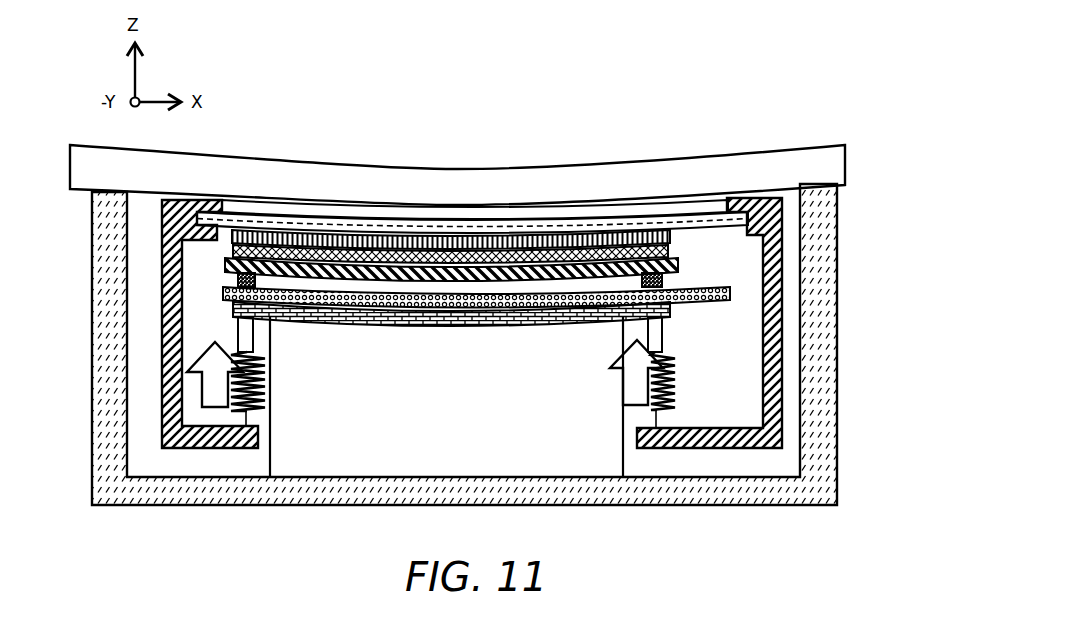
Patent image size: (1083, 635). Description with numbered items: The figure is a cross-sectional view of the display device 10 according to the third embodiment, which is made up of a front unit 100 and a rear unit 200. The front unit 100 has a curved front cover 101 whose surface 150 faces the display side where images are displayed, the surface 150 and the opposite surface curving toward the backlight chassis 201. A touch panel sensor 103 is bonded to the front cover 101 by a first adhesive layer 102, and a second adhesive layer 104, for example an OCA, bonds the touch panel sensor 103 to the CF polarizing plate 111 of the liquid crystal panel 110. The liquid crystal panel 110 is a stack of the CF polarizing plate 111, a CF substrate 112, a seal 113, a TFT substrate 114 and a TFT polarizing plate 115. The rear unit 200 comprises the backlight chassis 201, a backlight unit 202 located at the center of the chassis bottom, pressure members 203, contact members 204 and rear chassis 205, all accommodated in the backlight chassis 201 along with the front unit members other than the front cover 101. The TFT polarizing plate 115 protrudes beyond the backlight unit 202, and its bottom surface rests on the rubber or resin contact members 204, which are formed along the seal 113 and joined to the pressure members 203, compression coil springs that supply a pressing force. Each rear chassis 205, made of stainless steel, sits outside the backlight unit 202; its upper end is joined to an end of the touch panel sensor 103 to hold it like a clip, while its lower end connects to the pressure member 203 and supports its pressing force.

The display device 10 is at (530, 142).
The front unit 100 is at (592, 211).
The front cover 101 is at (675, 203).
The first adhesive layer 102 is at (705, 218).
The touch panel sensor 103 is at (672, 236).
The second adhesive layer 104 is at (670, 251).
The liquid crystal panel 110 is at (585, 281).
The CF polarizing plate 111 is at (680, 265).
The CF substrate 112 is at (664, 280).
The seal 113 is at (732, 293).
The TFT substrate 114 is at (672, 310).
The TFT polarizing plate 115 is at (664, 340).
The surface 150 is at (426, 184).
The rear unit 200 is at (527, 344).
The backlight chassis 201 is at (838, 492).
The backlight unit 202 is at (626, 460).
The pressure member 203 is at (677, 384).
The contact member 204 is at (668, 348).
The rear chassis 205 is at (783, 418).